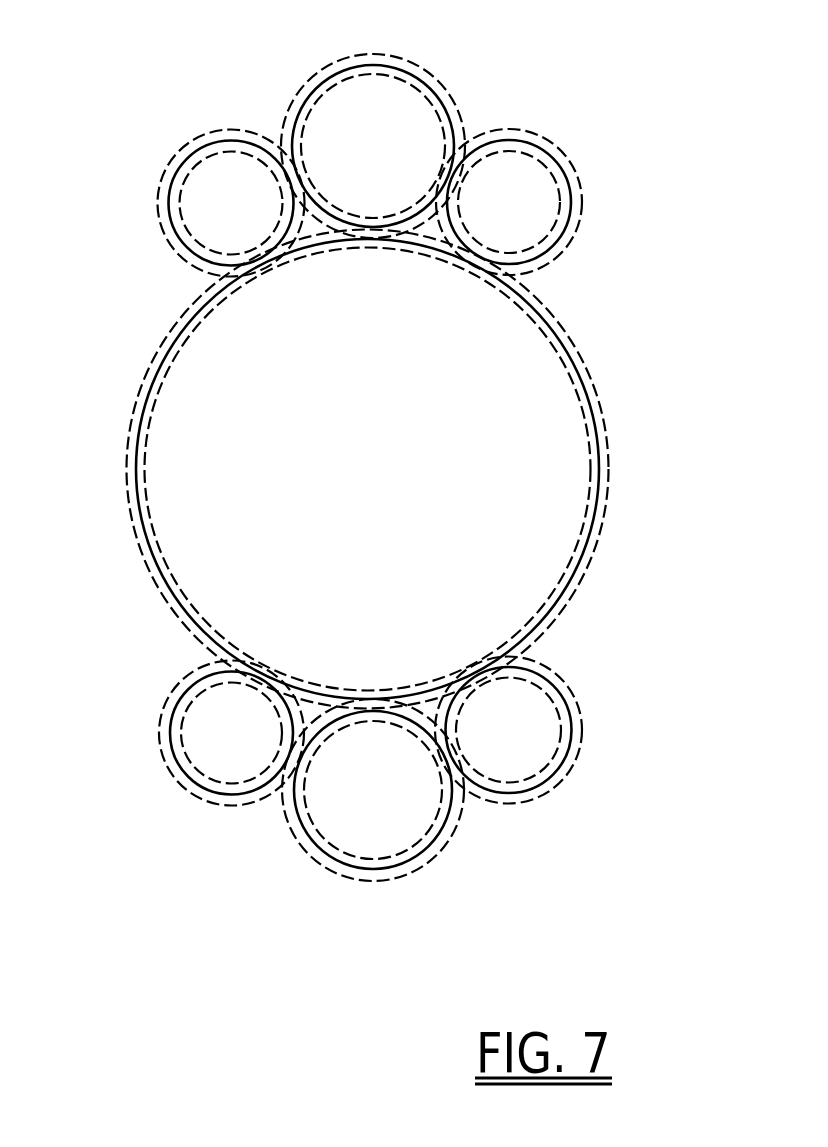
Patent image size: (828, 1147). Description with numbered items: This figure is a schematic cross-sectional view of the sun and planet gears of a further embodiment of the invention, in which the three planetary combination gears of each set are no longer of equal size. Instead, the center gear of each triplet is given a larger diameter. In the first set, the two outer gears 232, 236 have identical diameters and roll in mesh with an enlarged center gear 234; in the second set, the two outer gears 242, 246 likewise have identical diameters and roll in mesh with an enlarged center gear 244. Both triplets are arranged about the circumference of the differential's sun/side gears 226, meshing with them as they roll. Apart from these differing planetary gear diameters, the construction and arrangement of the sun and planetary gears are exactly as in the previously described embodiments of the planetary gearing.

The sun/side gears 226 is at (542, 392).
The outer gear 232 is at (223, 172).
The enlarged center gear 234 is at (355, 98).
The outer gear 236 is at (508, 165).
The outer gear 242 is at (528, 708).
The enlarged center gear 244 is at (407, 817).
The outer gear 246 is at (205, 730).